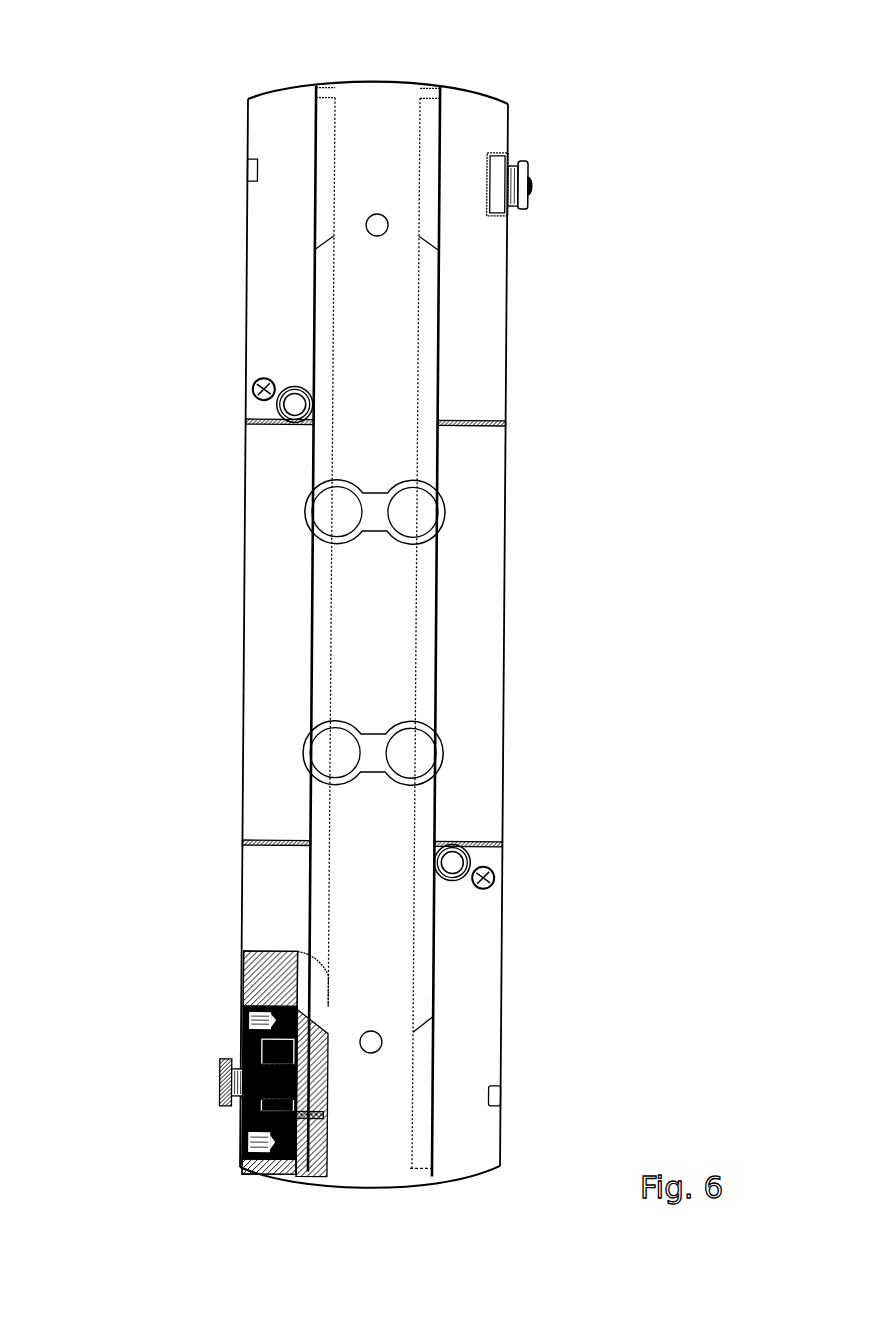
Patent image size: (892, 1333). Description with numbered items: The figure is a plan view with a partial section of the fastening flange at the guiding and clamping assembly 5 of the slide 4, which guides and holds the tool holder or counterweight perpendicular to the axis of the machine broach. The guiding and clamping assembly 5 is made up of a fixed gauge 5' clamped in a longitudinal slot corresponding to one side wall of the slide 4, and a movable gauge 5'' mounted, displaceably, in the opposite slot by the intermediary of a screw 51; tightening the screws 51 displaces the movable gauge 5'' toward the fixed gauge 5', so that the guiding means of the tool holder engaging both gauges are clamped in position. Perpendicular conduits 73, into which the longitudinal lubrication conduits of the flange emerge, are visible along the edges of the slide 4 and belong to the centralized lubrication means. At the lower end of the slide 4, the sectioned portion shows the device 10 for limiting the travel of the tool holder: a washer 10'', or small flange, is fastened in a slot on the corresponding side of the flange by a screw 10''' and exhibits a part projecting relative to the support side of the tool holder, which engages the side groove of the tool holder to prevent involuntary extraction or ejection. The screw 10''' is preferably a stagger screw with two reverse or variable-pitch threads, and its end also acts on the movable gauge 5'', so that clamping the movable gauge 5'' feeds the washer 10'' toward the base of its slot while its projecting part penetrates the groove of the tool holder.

The slide 4 is at (312, 623).
The guiding and clamping assembly 5 is at (374, 605).
The fixed gauge 5' is at (388, 633).
The movable gauge 5'' is at (397, 625).
The device for limiting the travel 10 is at (200, 1062).
The washer 10'' is at (341, 613).
The screw 10''' is at (354, 617).
The screw 51 is at (243, 1000).
The perpendicular conduit 73 is at (255, 393).